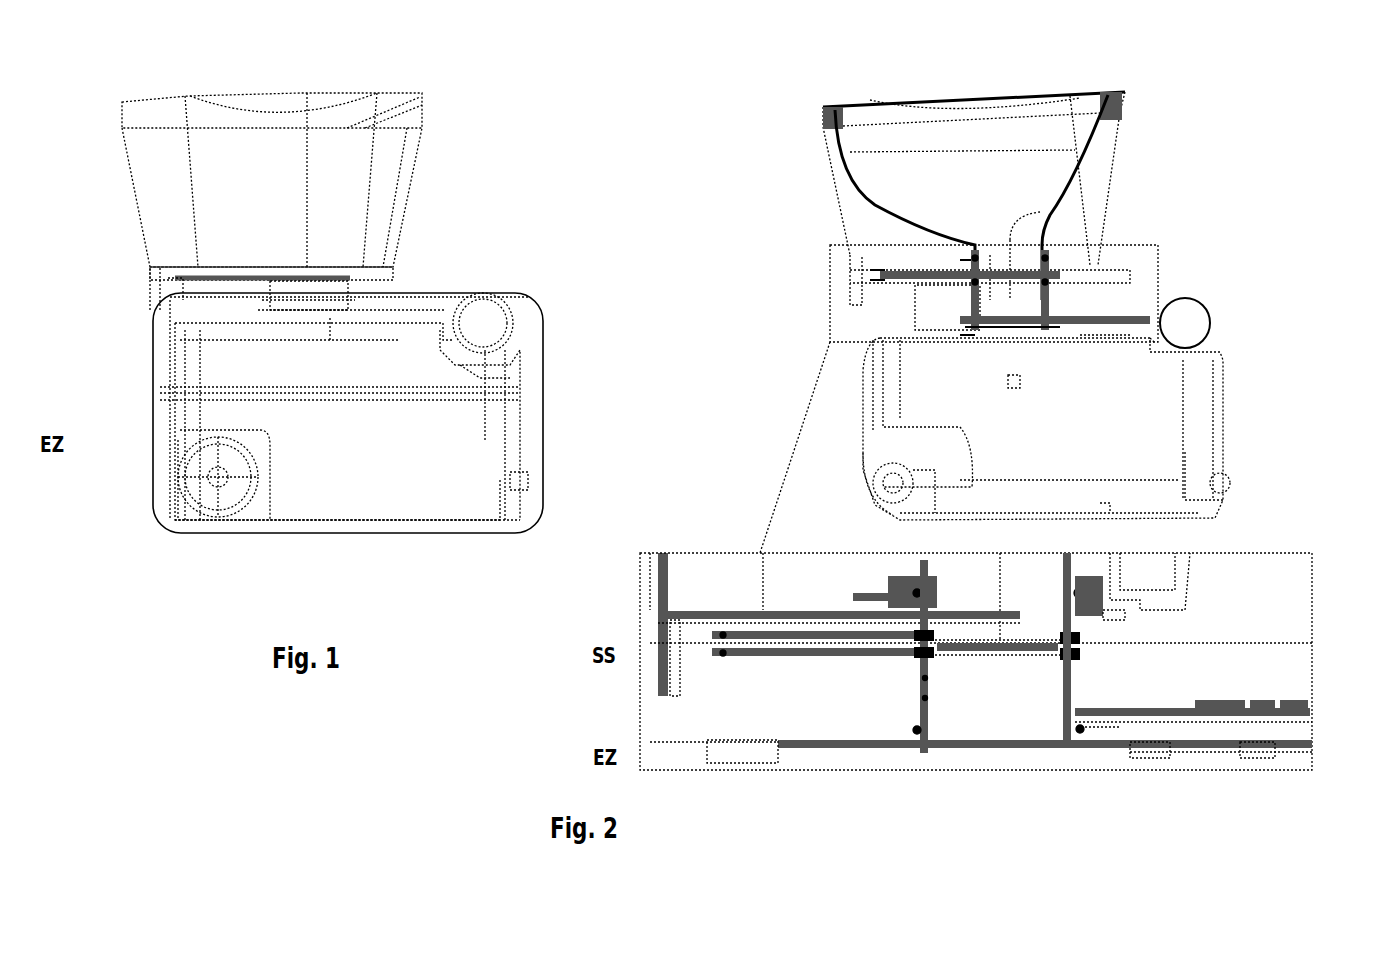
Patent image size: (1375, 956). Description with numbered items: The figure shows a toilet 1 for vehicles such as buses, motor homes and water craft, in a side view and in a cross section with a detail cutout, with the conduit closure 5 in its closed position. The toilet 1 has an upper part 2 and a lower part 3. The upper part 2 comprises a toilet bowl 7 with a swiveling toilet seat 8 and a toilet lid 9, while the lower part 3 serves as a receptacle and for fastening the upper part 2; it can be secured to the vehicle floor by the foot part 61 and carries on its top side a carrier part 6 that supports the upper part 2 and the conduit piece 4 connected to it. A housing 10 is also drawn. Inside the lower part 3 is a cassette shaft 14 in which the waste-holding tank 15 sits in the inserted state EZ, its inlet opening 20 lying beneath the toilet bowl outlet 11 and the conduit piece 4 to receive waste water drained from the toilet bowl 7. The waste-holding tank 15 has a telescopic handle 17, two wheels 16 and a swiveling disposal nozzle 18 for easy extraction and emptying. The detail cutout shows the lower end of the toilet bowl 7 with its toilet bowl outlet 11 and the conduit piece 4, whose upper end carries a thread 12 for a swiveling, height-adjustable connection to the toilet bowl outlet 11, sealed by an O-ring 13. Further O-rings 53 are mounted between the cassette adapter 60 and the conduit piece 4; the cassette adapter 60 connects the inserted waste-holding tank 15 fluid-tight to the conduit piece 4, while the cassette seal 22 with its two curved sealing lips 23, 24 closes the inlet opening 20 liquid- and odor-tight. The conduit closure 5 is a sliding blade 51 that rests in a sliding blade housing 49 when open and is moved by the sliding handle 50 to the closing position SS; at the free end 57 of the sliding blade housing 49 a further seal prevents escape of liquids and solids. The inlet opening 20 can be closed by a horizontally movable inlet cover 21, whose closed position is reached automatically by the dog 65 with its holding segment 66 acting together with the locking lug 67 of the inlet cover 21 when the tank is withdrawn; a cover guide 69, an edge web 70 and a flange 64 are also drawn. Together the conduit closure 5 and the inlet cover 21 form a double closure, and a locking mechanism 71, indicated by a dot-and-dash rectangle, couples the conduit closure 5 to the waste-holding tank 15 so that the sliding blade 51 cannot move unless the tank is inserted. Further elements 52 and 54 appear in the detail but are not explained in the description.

In FIG. 2, the toilet 1 is at (592, 105).
In FIG. 1, the upper part 2 is at (143, 170).
In FIG. 2, the upper part 2 is at (830, 145).
In FIG. 1, the lower part 3 is at (510, 368).
In FIG. 2, the conduit piece 4 is at (1050, 290).
In FIG. 1, the conduit closure 5 is at (243, 282).
In FIG. 2, the conduit closure 5 is at (940, 280).
In FIG. 1, the carrier part 6 is at (470, 293).
In FIG. 2, the toilet bowl 7 is at (850, 183).
In FIG. 2, the toilet seat 8 is at (838, 112).
In FIG. 2, the toilet lid 9 is at (882, 100).
In FIG. 2, the housing 10 is at (1195, 570).
In FIG. 2, the toilet bowl outlet 11 is at (940, 606).
In FIG. 2, the thread 12 is at (1090, 608).
In FIG. 2, the O-ring 13 is at (1075, 590).
In FIG. 1, the cassette shaft 14 is at (162, 318).
In FIG. 1, the waste-holding tank 15 is at (208, 406).
In FIG. 2, the waste-holding tank 15 is at (1163, 407).
In FIG. 2, the wheel 16 is at (888, 488).
In FIG. 1, the handle 17 is at (520, 482).
In FIG. 1, the disposal nozzle 18 is at (471, 336).
In FIG. 2, the disposal nozzle 18 is at (1173, 336).
In FIG. 2, the inlet opening 20 is at (1018, 327).
In FIG. 2, the inlet cover 21 is at (1215, 722).
In FIG. 2, the cassette seal 22 is at (915, 733).
In FIG. 2, the sealing lip 23 is at (1075, 732).
In FIG. 2, the sealing lip 24 is at (1088, 732).
In FIG. 2, the sliding blade housing 49 is at (758, 656).
In FIG. 1, the sliding handle 50 is at (152, 280).
In FIG. 2, the sliding handle 50 is at (850, 280).
In FIG. 2, the sliding blade 51 is at (992, 648).
In FIG. 2, the spring 52 is at (1032, 650).
In FIG. 2, the O-ring 53 is at (1068, 676).
In FIG. 2, the pin 54 is at (723, 653).
In FIG. 2, the free end of the sliding blade housing 57 is at (728, 656).
In FIG. 2, the cassette adapter 60 is at (918, 672).
In FIG. 1, the foot part 61 is at (200, 535).
In FIG. 2, the flange 64 is at (912, 728).
In FIG. 2, the dog 65 is at (1218, 712).
In FIG. 2, the holding segment 66 is at (1290, 710).
In FIG. 2, the locking lug 67 is at (1270, 712).
In FIG. 2, the cover guide 69 is at (1215, 730).
In FIG. 2, the edge web 70 is at (1308, 722).
In FIG. 2, the locking mechanism 71 is at (915, 310).